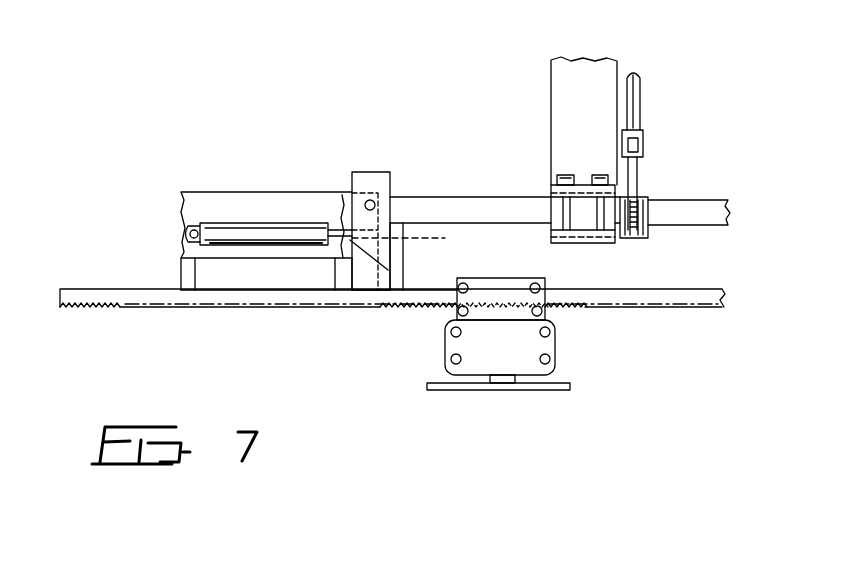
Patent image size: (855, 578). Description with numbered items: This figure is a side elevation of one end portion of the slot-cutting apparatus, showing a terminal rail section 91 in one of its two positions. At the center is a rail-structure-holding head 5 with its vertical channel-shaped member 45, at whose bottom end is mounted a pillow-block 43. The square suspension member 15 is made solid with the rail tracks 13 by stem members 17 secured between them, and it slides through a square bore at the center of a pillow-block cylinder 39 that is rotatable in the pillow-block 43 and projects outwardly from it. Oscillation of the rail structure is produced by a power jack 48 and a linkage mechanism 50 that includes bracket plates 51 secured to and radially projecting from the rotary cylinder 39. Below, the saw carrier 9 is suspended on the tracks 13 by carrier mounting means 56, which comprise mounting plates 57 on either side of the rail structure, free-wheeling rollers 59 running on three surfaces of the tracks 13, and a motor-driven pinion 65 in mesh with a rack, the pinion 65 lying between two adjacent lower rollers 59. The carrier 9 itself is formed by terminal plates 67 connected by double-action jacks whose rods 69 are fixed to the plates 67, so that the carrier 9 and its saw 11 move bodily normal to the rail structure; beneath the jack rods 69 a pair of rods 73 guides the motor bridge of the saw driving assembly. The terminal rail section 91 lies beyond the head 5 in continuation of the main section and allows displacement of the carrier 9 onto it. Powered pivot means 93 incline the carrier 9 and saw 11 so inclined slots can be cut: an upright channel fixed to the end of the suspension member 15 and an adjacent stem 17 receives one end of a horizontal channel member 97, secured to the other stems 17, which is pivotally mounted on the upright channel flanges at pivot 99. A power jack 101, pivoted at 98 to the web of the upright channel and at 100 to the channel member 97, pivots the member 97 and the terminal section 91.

The rail-structure-holding head 5 is at (572, 53).
The saw carrier 9 is at (562, 351).
The saw 11 is at (562, 390).
The rail track 13 is at (413, 290).
The suspension member 15 is at (450, 195).
The stem member 17 is at (193, 277).
The pillow-block cylinder 39 is at (652, 196).
The pillow-block 43 is at (582, 212).
The channel-shaped member 45 is at (552, 108).
The power jack 48 is at (639, 108).
The linkage mechanism 50 is at (650, 167).
The bracket plate 51 is at (624, 238).
The carrier mounting means 56 is at (556, 284).
The mounting plate 57 is at (495, 288).
The roller 59 is at (547, 293).
The pinion 65 is at (513, 313).
The terminal plate 67 is at (517, 358).
The jack rod 69 is at (447, 332).
The rod 73 is at (447, 360).
The terminal rail section 91 is at (130, 308).
The powered pivot means 93 is at (378, 167).
The horizontal channel member 97 is at (224, 192).
The pivot 98 is at (413, 240).
The pivot 99 is at (376, 203).
The pivot 100 is at (188, 234).
The power jack 101 is at (256, 233).